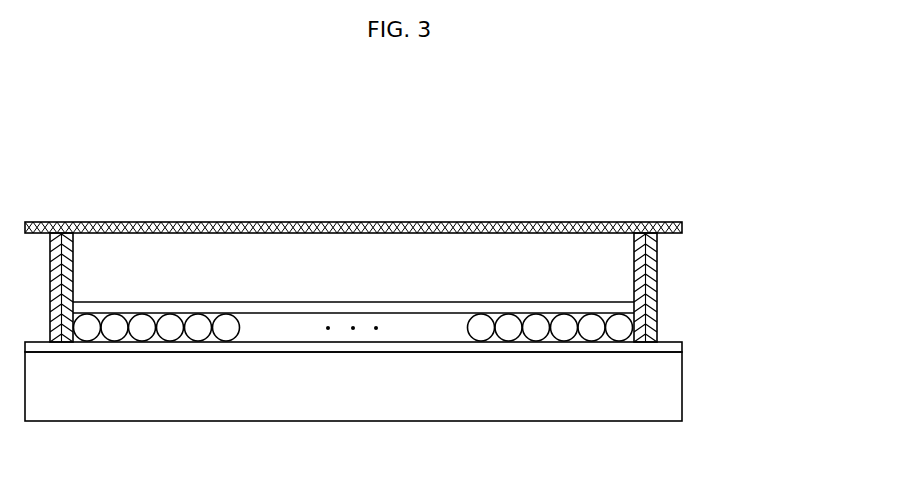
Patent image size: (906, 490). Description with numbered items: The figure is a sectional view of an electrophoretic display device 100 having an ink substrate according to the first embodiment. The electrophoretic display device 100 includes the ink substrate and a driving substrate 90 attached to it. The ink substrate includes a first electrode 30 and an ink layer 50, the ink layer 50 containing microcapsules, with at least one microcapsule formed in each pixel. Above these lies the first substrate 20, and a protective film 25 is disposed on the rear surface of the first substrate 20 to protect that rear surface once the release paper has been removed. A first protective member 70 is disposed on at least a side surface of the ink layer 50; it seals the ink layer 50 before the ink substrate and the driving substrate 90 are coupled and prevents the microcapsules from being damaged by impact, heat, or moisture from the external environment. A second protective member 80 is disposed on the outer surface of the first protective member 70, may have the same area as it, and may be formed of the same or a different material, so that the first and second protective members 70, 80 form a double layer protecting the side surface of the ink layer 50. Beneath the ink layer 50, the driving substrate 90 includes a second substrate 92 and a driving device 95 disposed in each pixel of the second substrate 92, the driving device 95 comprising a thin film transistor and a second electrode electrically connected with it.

The electrophoretic display device 100 is at (112, 100).
The protective film 25 is at (405, 222).
The first protective member 70 is at (68, 258).
The second protective member 80 is at (657, 258).
The first substrate 20 is at (226, 250).
The first electrode 30 is at (305, 302).
The ink layer 50 is at (415, 331).
The driving substrate 90 is at (403, 373).
The driving device 95 is at (682, 348).
The second substrate 92 is at (379, 386).